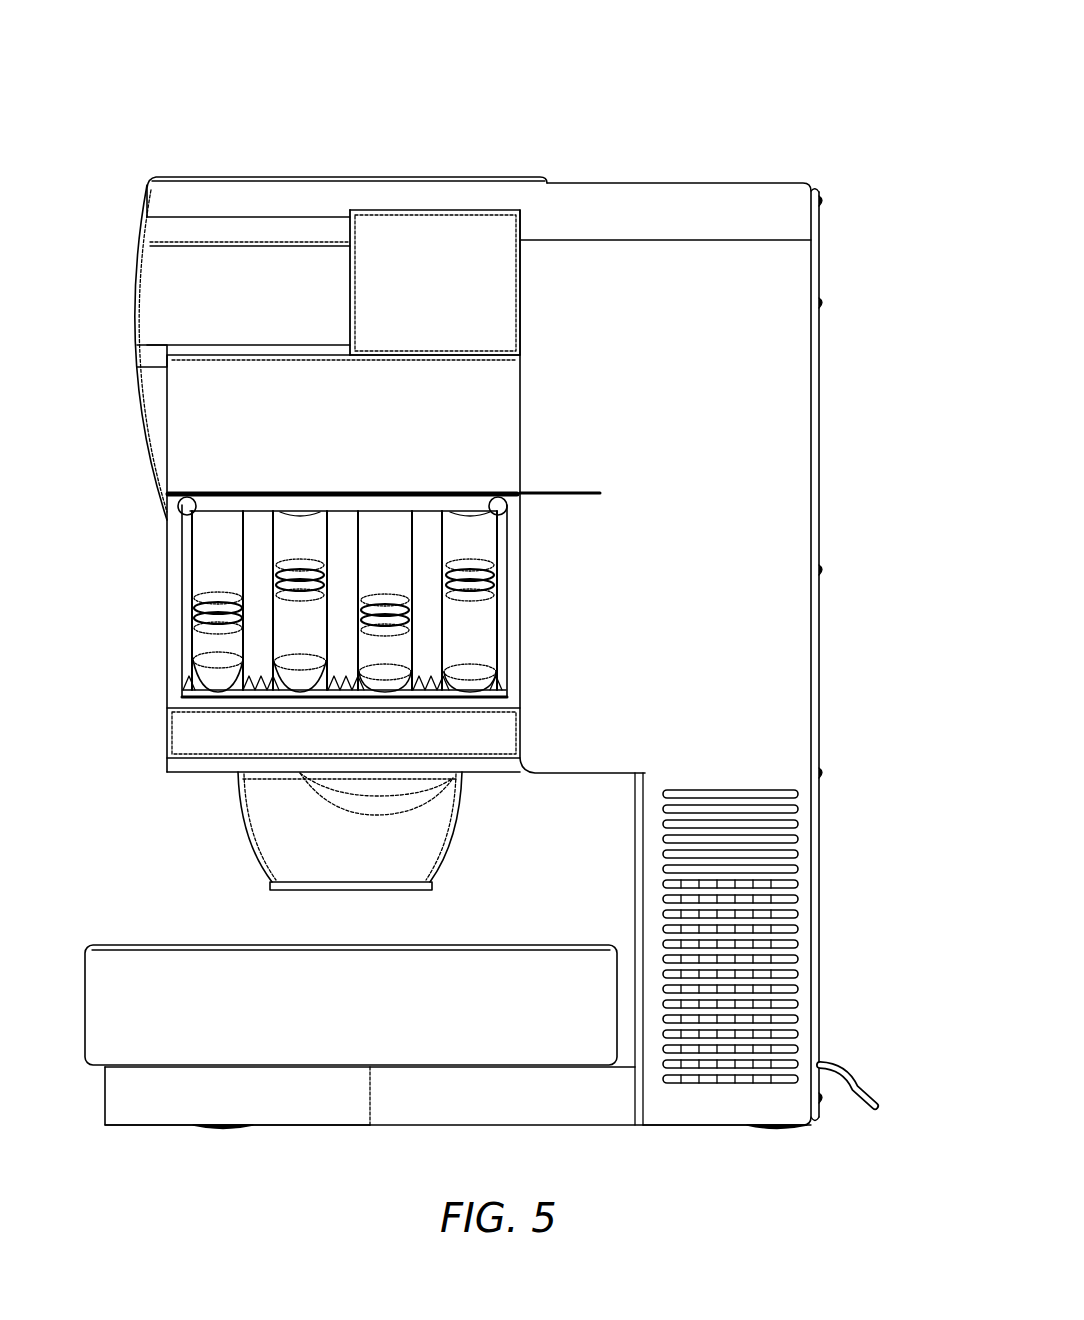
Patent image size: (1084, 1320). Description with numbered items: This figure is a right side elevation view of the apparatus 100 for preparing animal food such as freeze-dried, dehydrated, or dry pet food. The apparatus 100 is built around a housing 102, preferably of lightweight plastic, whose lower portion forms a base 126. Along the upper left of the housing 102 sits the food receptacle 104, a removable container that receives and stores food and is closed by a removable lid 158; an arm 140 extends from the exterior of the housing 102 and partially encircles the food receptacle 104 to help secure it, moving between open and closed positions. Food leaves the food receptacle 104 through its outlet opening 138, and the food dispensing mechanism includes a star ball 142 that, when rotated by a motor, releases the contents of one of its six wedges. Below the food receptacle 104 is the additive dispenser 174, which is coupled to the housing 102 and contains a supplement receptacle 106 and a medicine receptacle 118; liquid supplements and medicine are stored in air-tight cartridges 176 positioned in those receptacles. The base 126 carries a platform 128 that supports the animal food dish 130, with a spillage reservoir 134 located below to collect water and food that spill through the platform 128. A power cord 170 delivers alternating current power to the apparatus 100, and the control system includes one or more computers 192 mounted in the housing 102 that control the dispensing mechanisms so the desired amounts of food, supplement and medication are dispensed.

The apparatus 100 is at (243, 92).
The housing 102 is at (790, 382).
The food receptacle 104 is at (187, 268).
The arm 140 is at (150, 353).
The removable lid 158 is at (220, 197).
The additive dispenser 174 is at (172, 628).
The cartridges 176 is at (218, 570).
The medicine receptacle 118 is at (500, 672).
The supplement receptacle 106 is at (263, 693).
The star ball 142 is at (355, 790).
The outlet opening 138 is at (275, 835).
The animal food dish 130 is at (100, 982).
The spillage reservoir 134 is at (150, 1113).
The platform 128 is at (415, 1115).
The base 126 is at (725, 1113).
The computers 192 is at (730, 790).
The power cord 170 is at (850, 1080).